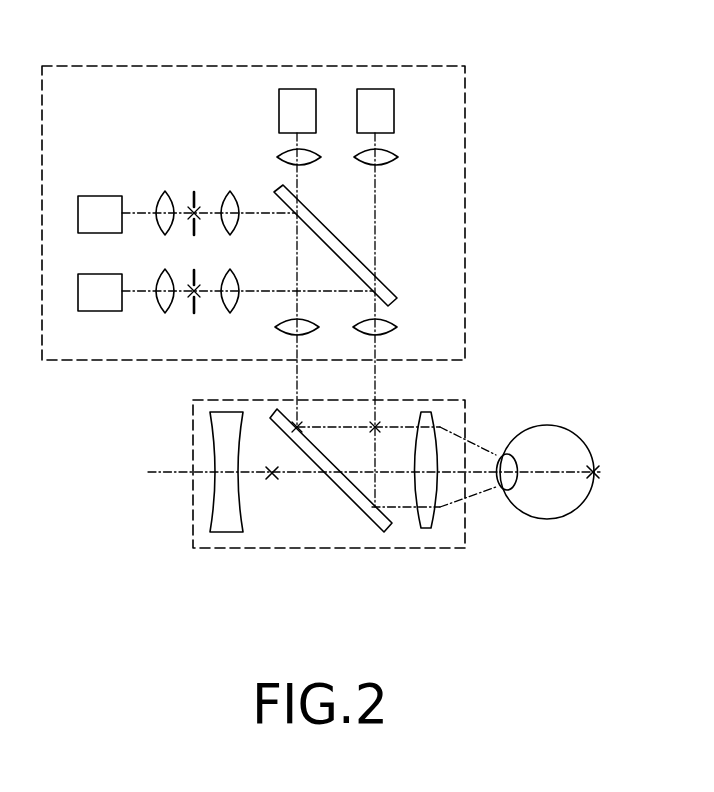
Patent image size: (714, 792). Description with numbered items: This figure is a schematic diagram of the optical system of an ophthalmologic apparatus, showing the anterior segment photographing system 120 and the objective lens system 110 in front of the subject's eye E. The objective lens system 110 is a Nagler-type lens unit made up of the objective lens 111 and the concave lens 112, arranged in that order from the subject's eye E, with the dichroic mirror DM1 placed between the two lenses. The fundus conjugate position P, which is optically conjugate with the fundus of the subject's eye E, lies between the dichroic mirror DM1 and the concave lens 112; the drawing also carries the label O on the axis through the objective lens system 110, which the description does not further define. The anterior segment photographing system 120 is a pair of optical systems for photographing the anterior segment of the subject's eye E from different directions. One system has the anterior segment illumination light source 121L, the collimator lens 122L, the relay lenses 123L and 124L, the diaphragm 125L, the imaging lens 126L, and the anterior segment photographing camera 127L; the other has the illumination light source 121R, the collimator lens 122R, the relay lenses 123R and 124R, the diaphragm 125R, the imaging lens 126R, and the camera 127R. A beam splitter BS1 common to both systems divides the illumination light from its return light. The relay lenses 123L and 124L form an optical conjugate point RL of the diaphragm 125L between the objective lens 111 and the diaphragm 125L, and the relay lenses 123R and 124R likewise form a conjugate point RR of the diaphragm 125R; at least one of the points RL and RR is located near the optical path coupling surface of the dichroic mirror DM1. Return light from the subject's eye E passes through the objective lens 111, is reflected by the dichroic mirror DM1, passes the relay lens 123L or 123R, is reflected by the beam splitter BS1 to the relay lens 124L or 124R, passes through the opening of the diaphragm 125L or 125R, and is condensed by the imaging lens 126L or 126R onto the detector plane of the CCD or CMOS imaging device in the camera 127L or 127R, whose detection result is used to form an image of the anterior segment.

The anterior segment photographing system 120 is at (465, 66).
The objective lens system 110 is at (465, 400).
The anterior segment illumination light source 121R is at (279, 107).
The anterior segment illumination light source 121L is at (394, 112).
The collimator lens 122R is at (277, 155).
The collimator lens 122L is at (398, 157).
The relay lens 123R is at (332, 315).
The relay lens 123L is at (397, 327).
The relay lens 124R is at (230, 191).
The relay lens 124L is at (230, 313).
The diaphragm (aperture stop) 125R is at (194, 193).
The diaphragm (aperture stop) 125L is at (193, 316).
The imaging lens 126R is at (166, 235).
The imaging lens 126L is at (165, 313).
The anterior segment photographing camera 127R is at (100, 196).
The anterior segment photographing camera 127L is at (100, 311).
The beam splitter BS1 is at (380, 281).
The dichroic mirror DM1 is at (356, 510).
The objective lens 111 is at (427, 528).
The concave lens 112 is at (225, 532).
The subject's eye E is at (550, 424).
The optical axis O is at (131, 474).
The fundus conjugate position P is at (270, 486).
The optical conjugate point RR is at (299, 426).
The optical conjugate point RL is at (377, 425).